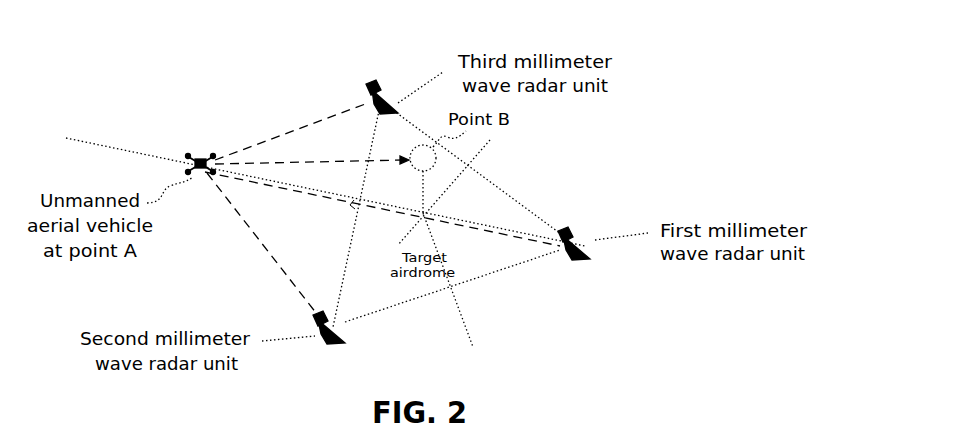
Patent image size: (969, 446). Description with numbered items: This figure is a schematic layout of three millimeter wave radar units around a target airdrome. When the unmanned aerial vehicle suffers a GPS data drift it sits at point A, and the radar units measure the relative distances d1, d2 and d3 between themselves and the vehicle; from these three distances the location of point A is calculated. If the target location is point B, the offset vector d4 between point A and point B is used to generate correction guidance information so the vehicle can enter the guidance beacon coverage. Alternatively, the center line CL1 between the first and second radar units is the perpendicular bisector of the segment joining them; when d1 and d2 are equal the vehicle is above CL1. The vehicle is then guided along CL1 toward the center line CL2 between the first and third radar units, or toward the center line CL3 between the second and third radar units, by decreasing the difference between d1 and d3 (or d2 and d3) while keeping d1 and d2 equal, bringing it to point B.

The center line between the first millimeter wave radar unit and the second millimet CL1 is at (448, 280).
The center line between the first millimeter wave radar unit and the third millimete CL2 is at (460, 192).
The center line between the second millimeter wave radar unit and the third millimet CL3 is at (325, 183).
The relative distance between the first millimeter wave radar unit and the unmanned d1 is at (382, 209).
The relative distance between the second millimeter wave radar unit and the unmanned d2 is at (263, 245).
The relative distance between the third millimeter wave radar unit and the unmanned d3 is at (291, 131).
The offset vector between point A and point B d4 is at (312, 155).